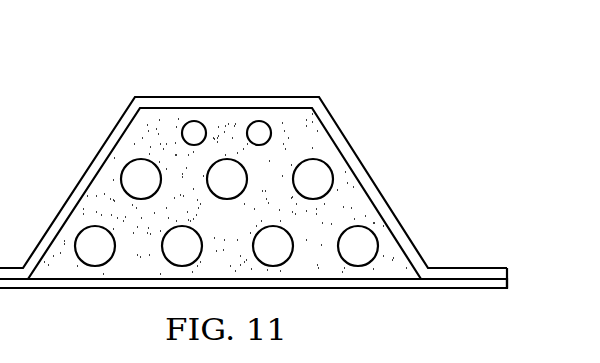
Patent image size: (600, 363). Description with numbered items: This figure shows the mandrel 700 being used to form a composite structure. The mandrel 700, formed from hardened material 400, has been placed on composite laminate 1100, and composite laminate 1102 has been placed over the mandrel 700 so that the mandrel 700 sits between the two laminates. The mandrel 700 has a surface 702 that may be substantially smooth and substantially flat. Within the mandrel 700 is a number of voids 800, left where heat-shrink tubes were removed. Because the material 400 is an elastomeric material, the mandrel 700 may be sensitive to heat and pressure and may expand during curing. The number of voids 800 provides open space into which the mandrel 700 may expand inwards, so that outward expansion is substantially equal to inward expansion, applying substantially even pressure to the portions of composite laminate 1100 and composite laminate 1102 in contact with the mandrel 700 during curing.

The material 400 is at (245, 233).
The mandrel 700 is at (143, 147).
The surface 702 is at (313, 137).
The number of voids 800 is at (350, 248).
The composite laminate 1100 is at (79, 288).
The composite laminate 1102 is at (227, 97).